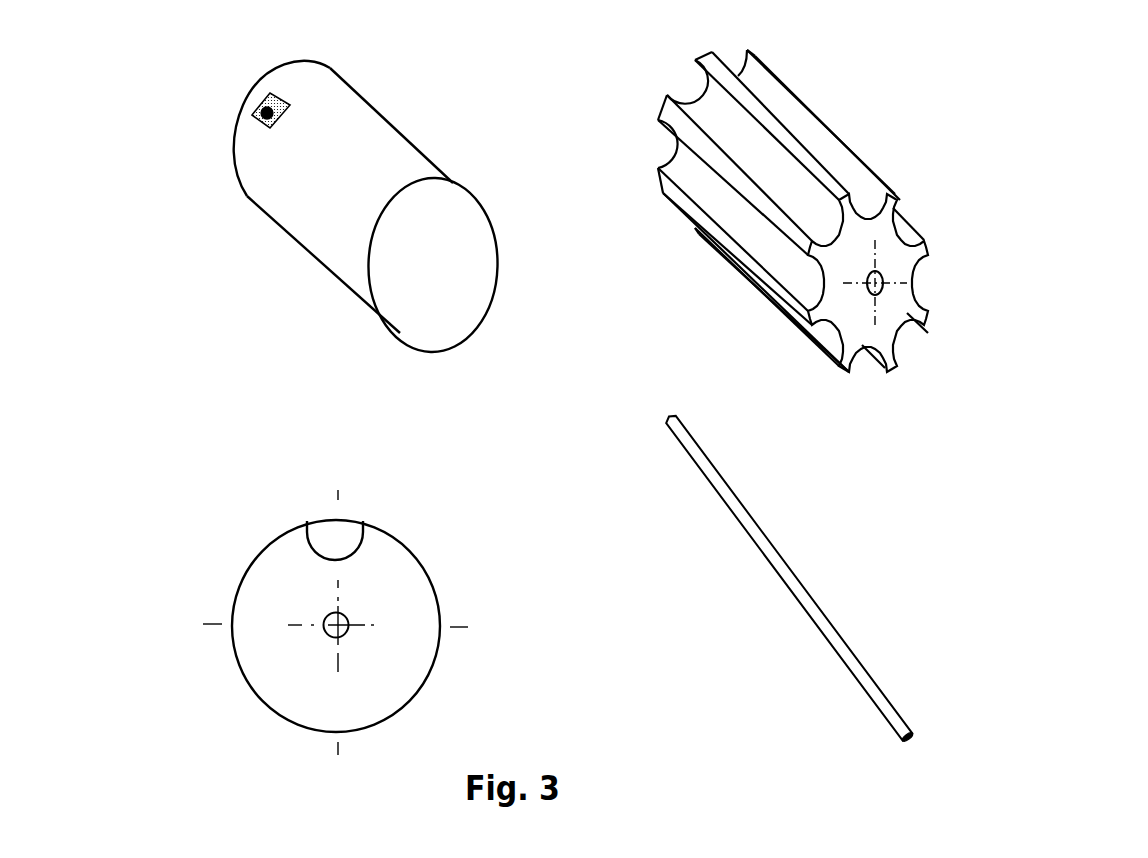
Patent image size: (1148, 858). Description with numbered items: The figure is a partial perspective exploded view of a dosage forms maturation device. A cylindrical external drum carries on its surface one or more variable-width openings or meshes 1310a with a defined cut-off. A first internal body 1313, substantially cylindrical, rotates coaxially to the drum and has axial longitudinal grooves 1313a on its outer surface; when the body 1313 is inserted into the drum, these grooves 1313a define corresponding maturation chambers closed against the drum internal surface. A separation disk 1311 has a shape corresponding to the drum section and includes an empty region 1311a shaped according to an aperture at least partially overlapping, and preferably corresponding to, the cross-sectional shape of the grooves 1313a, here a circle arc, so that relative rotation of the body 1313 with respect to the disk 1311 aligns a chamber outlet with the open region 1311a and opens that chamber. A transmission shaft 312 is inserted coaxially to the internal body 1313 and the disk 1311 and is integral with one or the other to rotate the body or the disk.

The variable-width opening or mesh 1310a is at (262, 112).
The first internal body 1313 is at (734, 187).
The axial longitudinal grooves 1313a is at (682, 82).
The separation disk 1311 is at (362, 582).
The empty region 1311a is at (336, 526).
The transmission shaft 312 is at (819, 565).